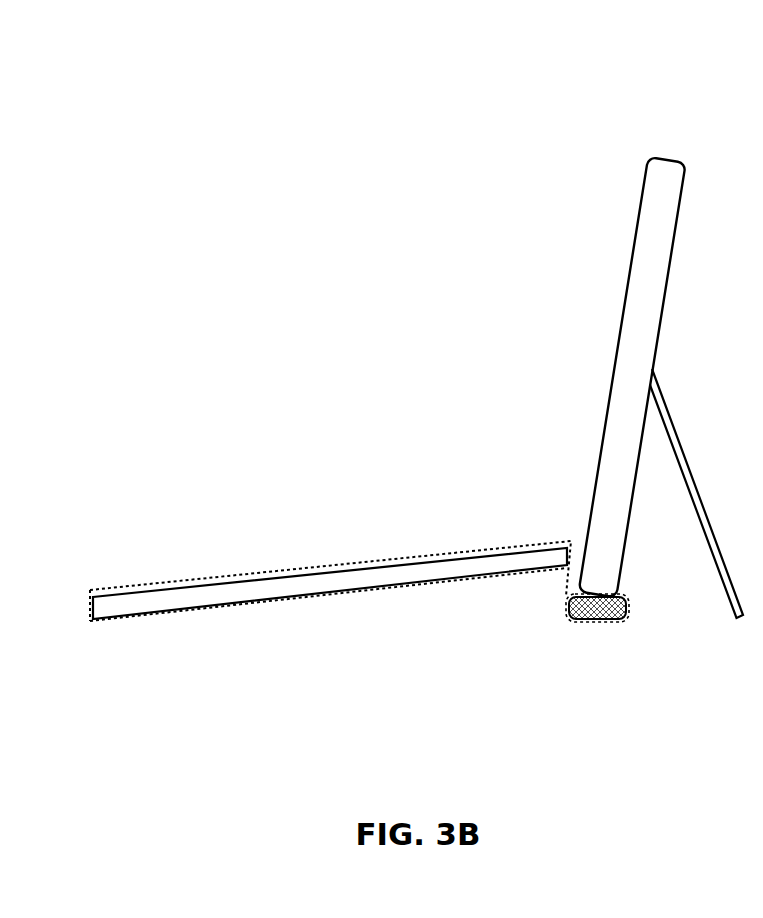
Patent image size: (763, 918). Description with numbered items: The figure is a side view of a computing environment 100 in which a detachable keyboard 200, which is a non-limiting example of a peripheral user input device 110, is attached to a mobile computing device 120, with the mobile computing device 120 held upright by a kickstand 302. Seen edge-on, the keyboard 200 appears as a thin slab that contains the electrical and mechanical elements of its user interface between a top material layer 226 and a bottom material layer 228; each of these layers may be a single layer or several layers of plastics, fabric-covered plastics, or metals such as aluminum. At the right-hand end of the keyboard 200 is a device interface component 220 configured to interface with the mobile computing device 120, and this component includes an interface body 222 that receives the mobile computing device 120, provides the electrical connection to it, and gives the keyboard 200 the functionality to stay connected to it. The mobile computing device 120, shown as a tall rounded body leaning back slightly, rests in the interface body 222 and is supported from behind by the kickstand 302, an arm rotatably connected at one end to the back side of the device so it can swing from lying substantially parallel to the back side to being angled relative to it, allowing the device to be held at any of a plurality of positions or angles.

The computing environment 100 is at (440, 72).
The user input device 110 is at (280, 663).
The mobile computing device 120 is at (672, 162).
The detachable keyboard 200 is at (305, 569).
The device interface component 220 is at (545, 612).
The interface body 222 is at (627, 630).
The top material layer 226 is at (378, 562).
The bottom material layer 228 is at (335, 593).
The kickstand 302 is at (669, 413).